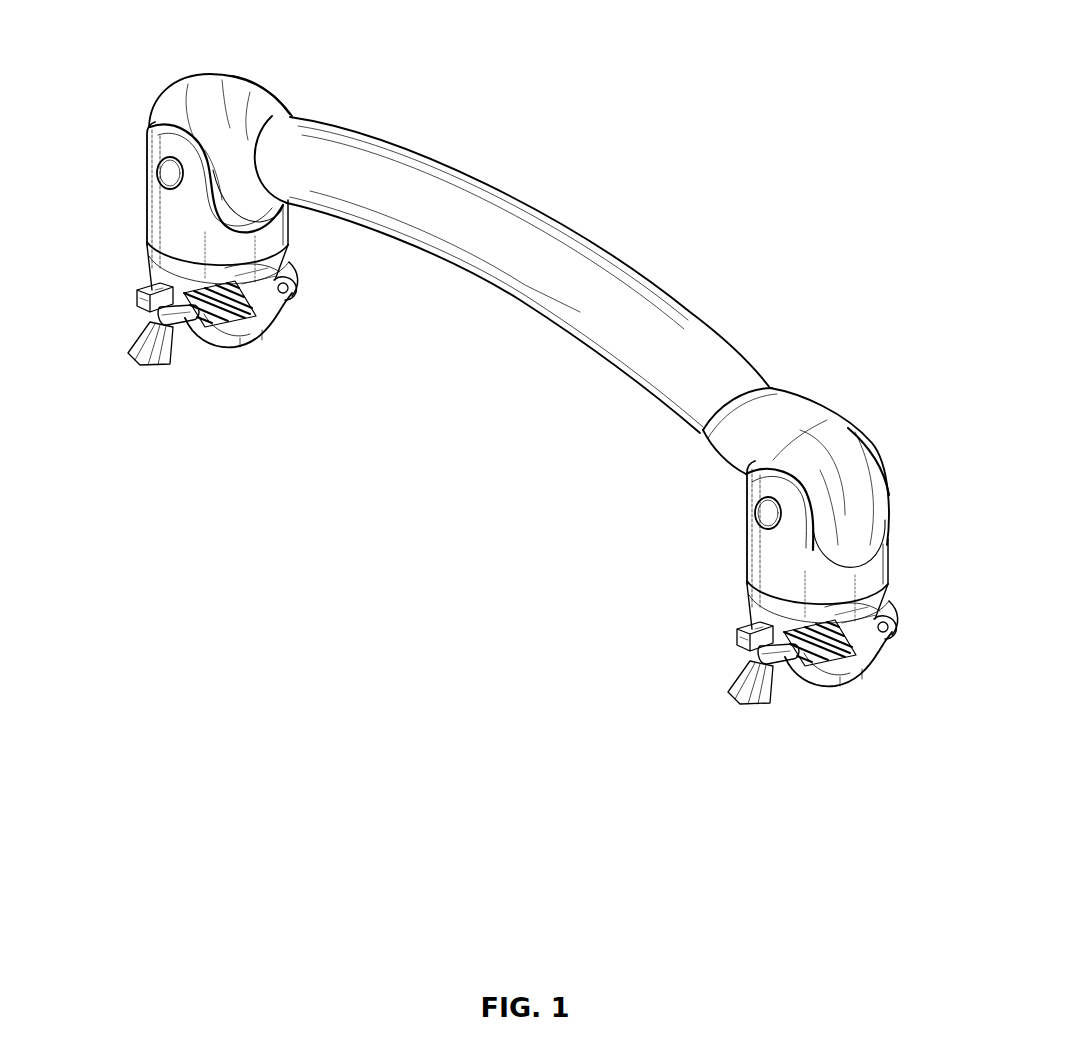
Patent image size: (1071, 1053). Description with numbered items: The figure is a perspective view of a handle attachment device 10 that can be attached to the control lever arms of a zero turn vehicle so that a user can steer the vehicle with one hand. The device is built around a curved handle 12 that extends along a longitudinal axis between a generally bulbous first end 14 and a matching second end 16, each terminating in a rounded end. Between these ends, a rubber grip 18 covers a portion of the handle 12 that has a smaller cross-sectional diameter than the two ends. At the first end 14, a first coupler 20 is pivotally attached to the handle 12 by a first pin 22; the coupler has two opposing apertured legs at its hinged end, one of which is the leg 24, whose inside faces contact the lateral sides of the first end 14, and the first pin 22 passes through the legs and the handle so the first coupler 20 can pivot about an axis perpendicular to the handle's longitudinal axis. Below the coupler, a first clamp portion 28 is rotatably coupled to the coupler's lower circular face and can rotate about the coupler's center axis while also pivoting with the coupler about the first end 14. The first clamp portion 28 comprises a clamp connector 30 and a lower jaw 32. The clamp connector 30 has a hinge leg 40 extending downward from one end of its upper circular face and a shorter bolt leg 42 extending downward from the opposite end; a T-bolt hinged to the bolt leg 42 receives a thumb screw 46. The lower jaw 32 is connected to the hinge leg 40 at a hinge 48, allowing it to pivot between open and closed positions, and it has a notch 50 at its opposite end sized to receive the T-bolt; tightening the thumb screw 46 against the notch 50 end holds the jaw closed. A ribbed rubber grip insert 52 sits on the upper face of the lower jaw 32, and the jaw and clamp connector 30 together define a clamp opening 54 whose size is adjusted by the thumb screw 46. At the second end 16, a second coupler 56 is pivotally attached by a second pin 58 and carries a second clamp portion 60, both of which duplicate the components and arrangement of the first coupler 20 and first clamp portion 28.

The handle attachment device 10 is at (772, 68).
The handle 12 is at (747, 317).
The first end 14 is at (215, 93).
The second end 16 is at (848, 465).
The grip 18 is at (577, 230).
The first coupler 20 is at (128, 252).
The first pin 22 is at (167, 173).
The leg 24 is at (178, 133).
The first clamp portion 28 is at (354, 325).
The clamp connector 30 is at (287, 254).
The lower jaw 32 is at (267, 318).
The hinge leg 40 is at (274, 270).
The bolt leg 42 is at (173, 278).
The thumb screw 46 is at (157, 353).
The hinge 48 is at (291, 290).
The notch 50 is at (173, 302).
The grip insert 52 is at (227, 327).
The clamp opening 54 is at (230, 300).
The second coupler 56 is at (720, 562).
The second pin 58 is at (770, 515).
The second clamp portion 60 is at (902, 630).